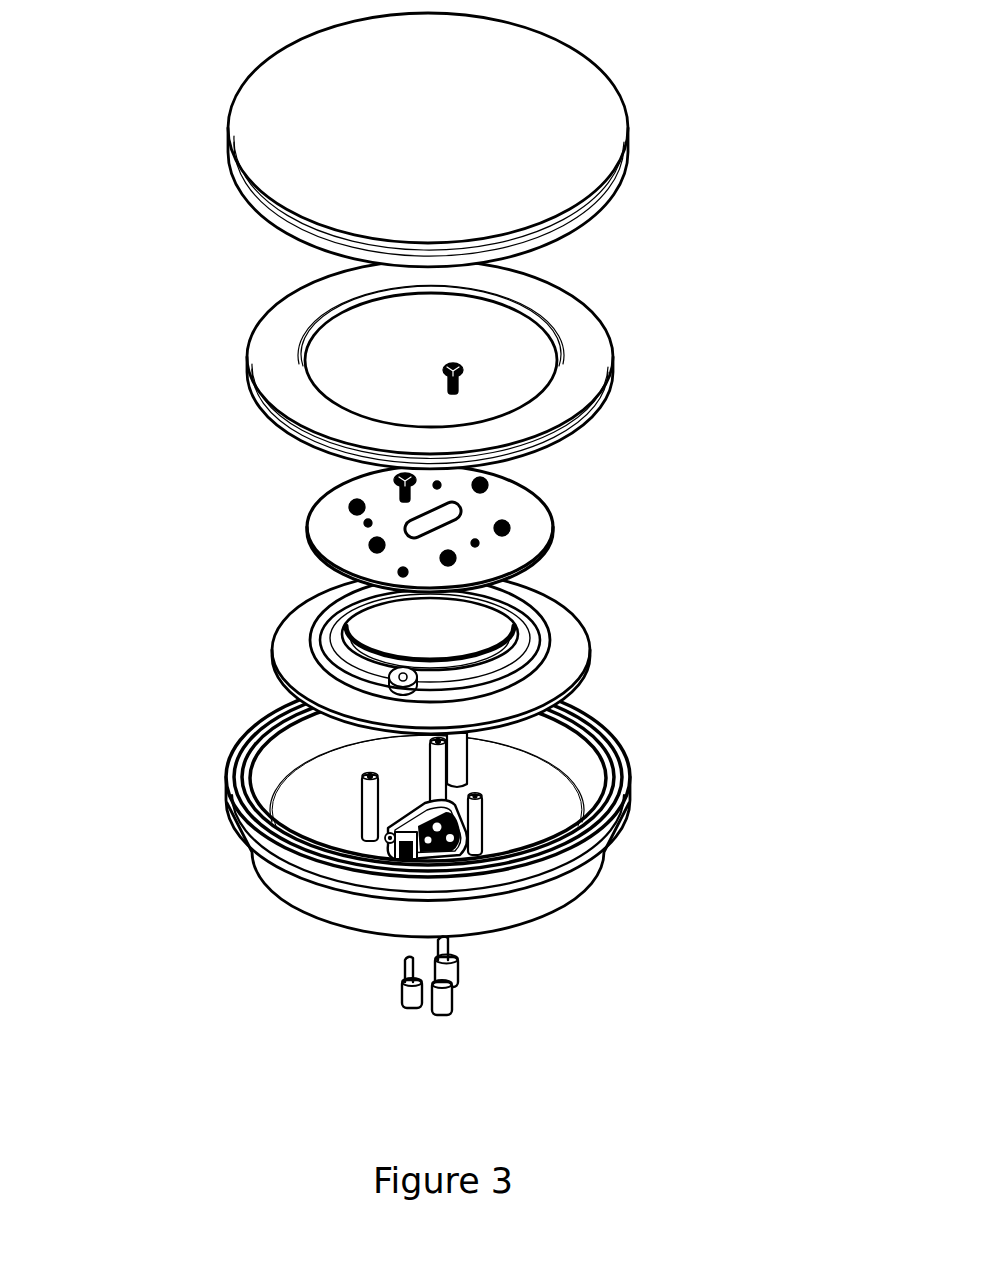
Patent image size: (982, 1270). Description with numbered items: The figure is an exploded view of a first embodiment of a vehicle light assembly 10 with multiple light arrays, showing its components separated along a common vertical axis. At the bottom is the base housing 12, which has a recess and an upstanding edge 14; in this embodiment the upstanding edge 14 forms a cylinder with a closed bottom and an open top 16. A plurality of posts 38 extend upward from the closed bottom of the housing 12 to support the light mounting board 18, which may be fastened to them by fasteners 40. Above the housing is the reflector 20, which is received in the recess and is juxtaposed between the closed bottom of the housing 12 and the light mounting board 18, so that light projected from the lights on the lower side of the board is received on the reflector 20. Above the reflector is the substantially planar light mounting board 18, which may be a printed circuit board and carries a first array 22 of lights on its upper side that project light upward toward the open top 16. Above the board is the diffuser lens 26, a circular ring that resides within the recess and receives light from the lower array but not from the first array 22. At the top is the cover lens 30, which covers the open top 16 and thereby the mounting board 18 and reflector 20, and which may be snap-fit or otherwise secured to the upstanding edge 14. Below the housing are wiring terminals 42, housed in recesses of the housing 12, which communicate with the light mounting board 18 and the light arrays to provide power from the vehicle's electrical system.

The vehicle light assembly 10 is at (612, 910).
The base housing 12 is at (383, 842).
The upstanding edge 14 is at (336, 908).
The open top 16 is at (535, 785).
The light mounting board 18 is at (528, 510).
The reflector 20 is at (575, 625).
The first array of lights 22 is at (372, 546).
The diffuser lens 26 is at (590, 357).
The cover lens 30 is at (573, 140).
The posts 38 is at (362, 810).
The fasteners 40 is at (446, 369).
The wiring terminals 42 is at (410, 1010).